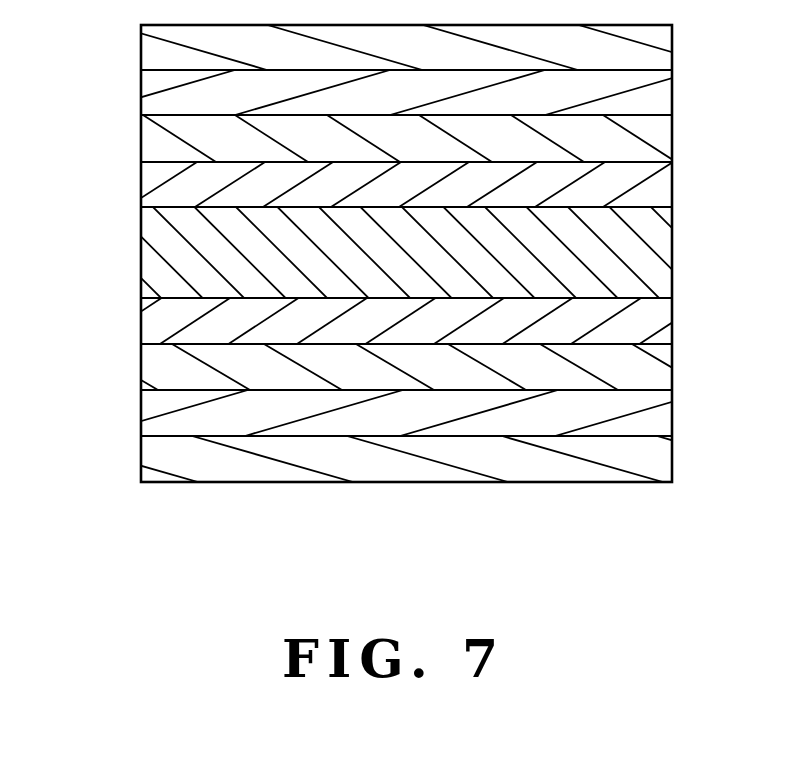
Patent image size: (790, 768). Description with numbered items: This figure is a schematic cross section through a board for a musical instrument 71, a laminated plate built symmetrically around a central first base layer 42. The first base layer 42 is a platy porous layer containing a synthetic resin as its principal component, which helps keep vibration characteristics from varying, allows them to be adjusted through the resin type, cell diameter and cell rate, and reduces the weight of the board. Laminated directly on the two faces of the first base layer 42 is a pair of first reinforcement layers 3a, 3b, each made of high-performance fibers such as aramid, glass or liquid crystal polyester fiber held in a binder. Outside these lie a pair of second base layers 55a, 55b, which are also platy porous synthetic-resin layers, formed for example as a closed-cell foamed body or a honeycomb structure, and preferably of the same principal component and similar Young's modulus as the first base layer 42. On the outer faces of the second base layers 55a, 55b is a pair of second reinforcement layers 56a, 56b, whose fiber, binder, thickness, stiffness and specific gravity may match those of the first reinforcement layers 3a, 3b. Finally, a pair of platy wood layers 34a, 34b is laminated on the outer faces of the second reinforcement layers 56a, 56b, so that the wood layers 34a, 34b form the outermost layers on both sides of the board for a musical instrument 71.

The board for a musical instrument 71 is at (93, 66).
The wood layer 34a is at (652, 42).
The second reinforcement layer 56a is at (653, 98).
The second base layer 55a is at (653, 140).
The first reinforcement layer 3a is at (662, 183).
The first base layer 42 is at (662, 250).
The first reinforcement layer 3b is at (658, 322).
The second base layer 55b is at (658, 372).
The second reinforcement layer 56b is at (657, 418).
The wood layer 34b is at (653, 455).